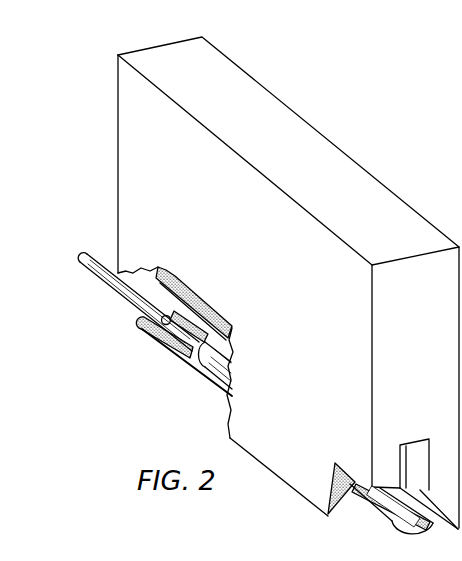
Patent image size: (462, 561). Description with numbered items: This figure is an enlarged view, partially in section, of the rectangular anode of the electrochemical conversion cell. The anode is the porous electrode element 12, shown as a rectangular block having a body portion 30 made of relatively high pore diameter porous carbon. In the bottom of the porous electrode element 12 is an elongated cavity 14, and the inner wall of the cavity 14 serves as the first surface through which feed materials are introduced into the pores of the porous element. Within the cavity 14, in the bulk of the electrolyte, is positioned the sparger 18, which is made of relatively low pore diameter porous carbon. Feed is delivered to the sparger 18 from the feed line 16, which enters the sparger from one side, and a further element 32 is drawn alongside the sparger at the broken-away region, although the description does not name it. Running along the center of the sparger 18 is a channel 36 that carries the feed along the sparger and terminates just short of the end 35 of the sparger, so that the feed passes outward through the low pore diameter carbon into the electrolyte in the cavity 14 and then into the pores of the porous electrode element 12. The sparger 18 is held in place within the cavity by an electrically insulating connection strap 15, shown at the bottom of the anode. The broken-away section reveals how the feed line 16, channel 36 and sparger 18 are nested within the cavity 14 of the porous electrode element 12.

The porous electrode element 12 is at (301, 110).
The body portion 30 is at (392, 193).
The line 16 is at (97, 251).
The upper gasket strip 32 is at (210, 323).
The channel 36 is at (157, 351).
The sparger 18 is at (210, 378).
The electrically insulating connection strap 15 is at (417, 455).
The cavity 14 is at (434, 516).
The end of the sparger 35 is at (382, 518).